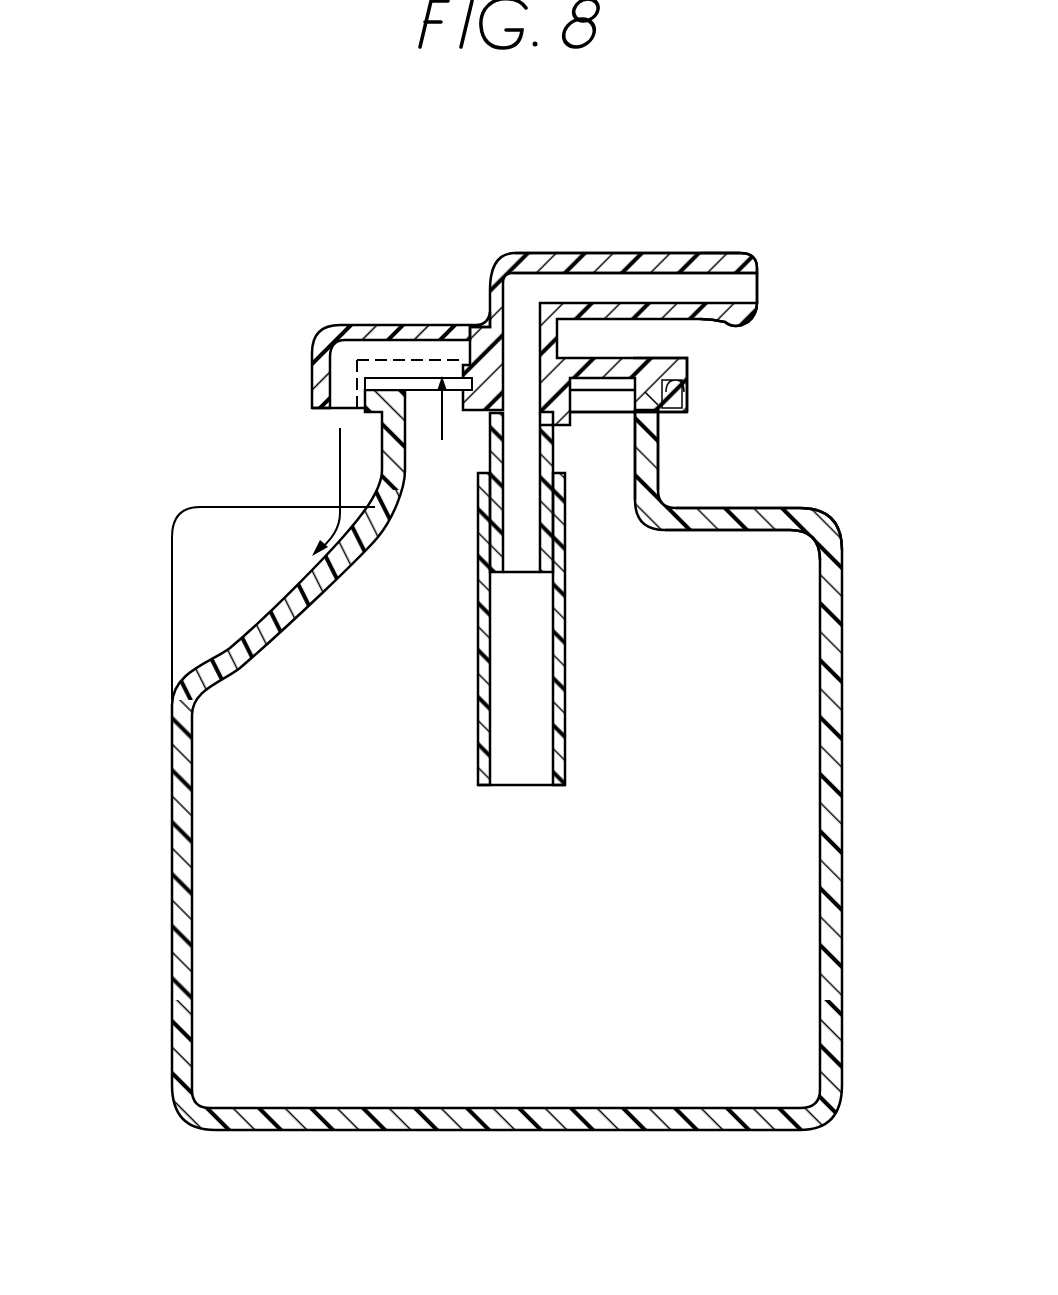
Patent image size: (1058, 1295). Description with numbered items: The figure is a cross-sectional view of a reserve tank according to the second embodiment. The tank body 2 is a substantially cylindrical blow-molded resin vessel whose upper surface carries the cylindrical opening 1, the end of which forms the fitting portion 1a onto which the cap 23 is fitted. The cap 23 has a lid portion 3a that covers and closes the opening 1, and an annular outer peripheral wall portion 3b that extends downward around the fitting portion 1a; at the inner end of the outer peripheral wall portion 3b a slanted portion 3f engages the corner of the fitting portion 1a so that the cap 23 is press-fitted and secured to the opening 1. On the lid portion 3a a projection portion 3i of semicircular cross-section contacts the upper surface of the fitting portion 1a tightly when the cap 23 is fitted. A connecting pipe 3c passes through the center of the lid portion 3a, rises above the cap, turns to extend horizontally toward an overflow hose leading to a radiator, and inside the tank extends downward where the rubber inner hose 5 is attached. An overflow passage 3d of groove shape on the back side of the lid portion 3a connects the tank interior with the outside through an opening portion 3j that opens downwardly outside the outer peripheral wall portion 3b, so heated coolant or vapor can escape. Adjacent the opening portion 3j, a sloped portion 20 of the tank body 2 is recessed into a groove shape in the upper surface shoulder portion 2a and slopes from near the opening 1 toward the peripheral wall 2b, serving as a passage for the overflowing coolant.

The opening 1 is at (660, 453).
The fitting portion 1a is at (690, 397).
The tank body 2 is at (842, 714).
The upper surface shoulder portion 2a is at (760, 507).
The peripheral wall 2b is at (172, 713).
The lid portion 3a is at (675, 357).
The annular outer peripheral wall portion 3b is at (692, 377).
The connecting pipe 3c is at (617, 253).
The overflow passage 3d is at (312, 363).
The slanted portion 3f is at (677, 413).
The projection portion 3i is at (378, 382).
The opening portion 3j is at (333, 417).
The inner hose 5 is at (478, 700).
The sloped portion 20 is at (312, 578).
The cap 23 is at (466, 255).